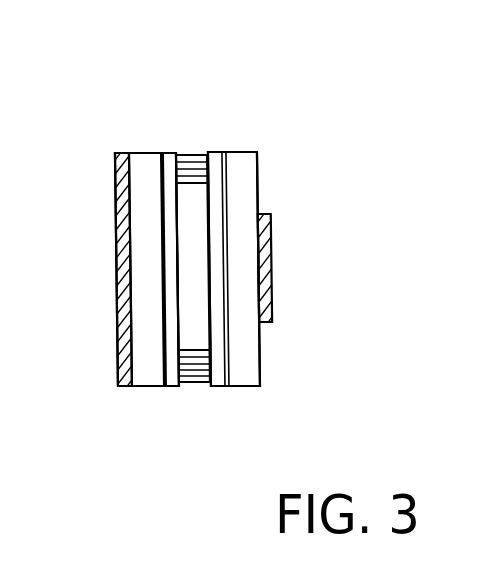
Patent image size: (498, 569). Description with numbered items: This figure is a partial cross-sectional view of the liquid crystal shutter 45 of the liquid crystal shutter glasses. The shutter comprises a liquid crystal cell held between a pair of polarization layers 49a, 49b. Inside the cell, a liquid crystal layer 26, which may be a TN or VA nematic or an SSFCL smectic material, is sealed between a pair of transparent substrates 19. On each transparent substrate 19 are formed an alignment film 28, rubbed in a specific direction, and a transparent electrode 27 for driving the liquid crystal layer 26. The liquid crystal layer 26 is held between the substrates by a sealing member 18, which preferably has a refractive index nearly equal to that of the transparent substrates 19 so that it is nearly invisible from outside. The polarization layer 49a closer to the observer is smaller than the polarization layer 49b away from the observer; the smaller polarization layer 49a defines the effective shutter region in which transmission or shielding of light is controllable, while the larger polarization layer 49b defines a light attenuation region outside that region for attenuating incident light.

The liquid crystal shutter 45 is at (347, 38).
The polarization layer 49b is at (116, 283).
The polarization layer 49a is at (270, 248).
The transparent electrode 27 is at (158, 213).
The transparent substrate 19 is at (145, 372).
The alignment film 28 is at (173, 152).
The sealing member 18 is at (202, 157).
The liquid crystal layer 26 is at (202, 303).